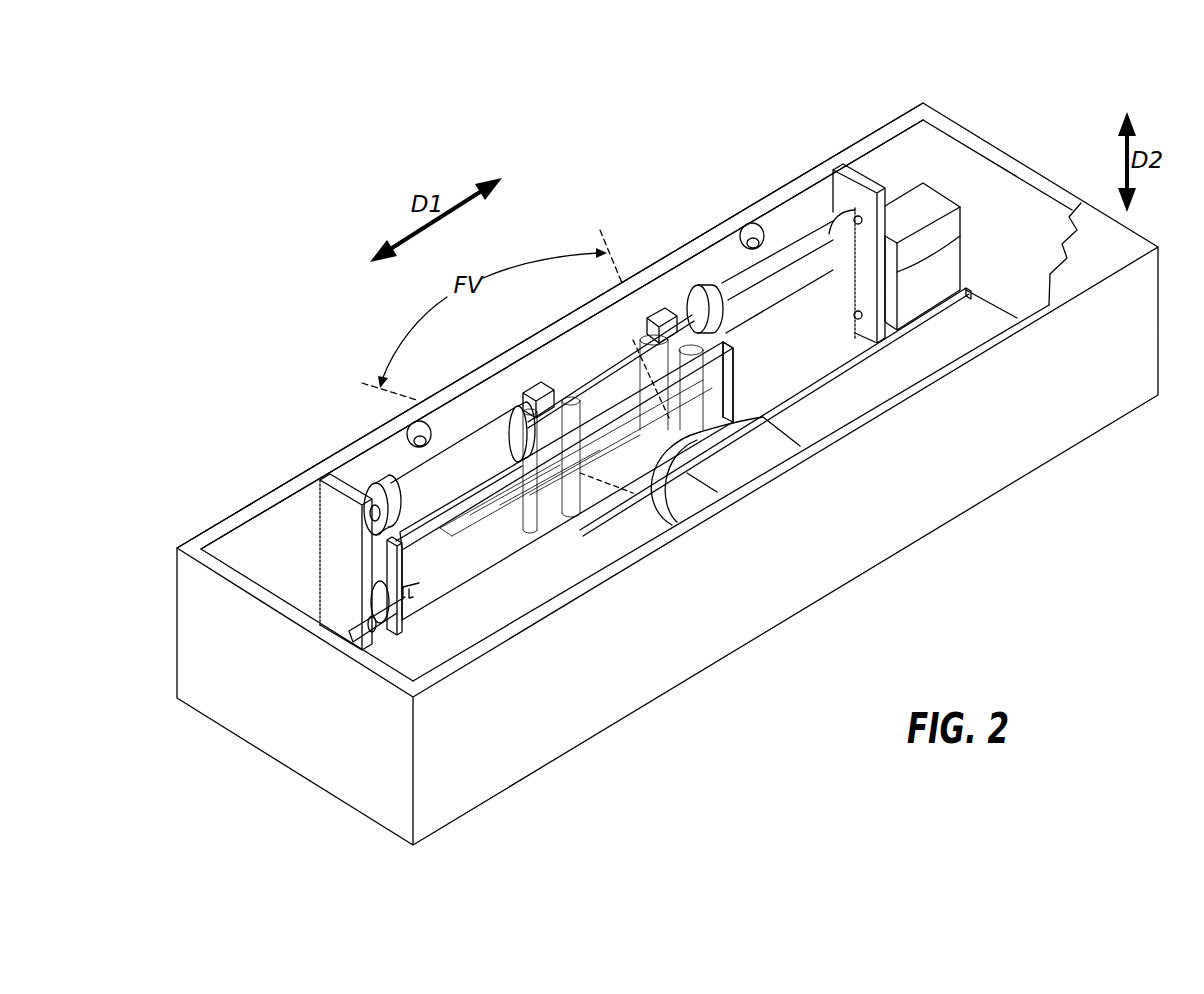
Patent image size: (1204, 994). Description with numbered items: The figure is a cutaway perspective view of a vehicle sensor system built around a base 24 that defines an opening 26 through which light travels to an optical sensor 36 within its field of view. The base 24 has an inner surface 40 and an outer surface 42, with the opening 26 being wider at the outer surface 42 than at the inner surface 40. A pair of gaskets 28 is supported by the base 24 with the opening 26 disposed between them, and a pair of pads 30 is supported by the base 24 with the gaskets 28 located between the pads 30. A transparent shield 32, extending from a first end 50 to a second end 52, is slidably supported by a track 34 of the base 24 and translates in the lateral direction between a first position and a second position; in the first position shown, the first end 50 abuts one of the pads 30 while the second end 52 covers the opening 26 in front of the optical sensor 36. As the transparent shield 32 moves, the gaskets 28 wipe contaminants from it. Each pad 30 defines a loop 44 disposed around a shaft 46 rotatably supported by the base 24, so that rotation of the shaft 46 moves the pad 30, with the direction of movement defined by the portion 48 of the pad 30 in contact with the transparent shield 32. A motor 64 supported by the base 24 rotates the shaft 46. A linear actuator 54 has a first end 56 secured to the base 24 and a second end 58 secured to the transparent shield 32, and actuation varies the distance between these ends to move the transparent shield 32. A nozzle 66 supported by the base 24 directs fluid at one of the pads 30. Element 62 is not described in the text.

The base 24 is at (777, 216).
The opening 26 is at (610, 380).
The gaskets 28 is at (538, 384).
The pads 30 is at (407, 512).
The transparent shield 32 is at (548, 530).
The track 34 is at (855, 364).
The optical sensor 36 is at (752, 452).
The inner surface 40 is at (803, 203).
The outer surface 42 is at (690, 246).
The loop 44 is at (436, 493).
The shaft 46 is at (646, 345).
The portion 48 is at (432, 550).
The first end 50 is at (488, 574).
The second end 52 is at (736, 368).
The linear actuator 54 is at (374, 632).
The first end 56 is at (348, 628).
The second end 58 is at (428, 612).
The gear housing 62 is at (962, 232).
The motor 64 is at (933, 208).
The nozzle 66 is at (424, 422).